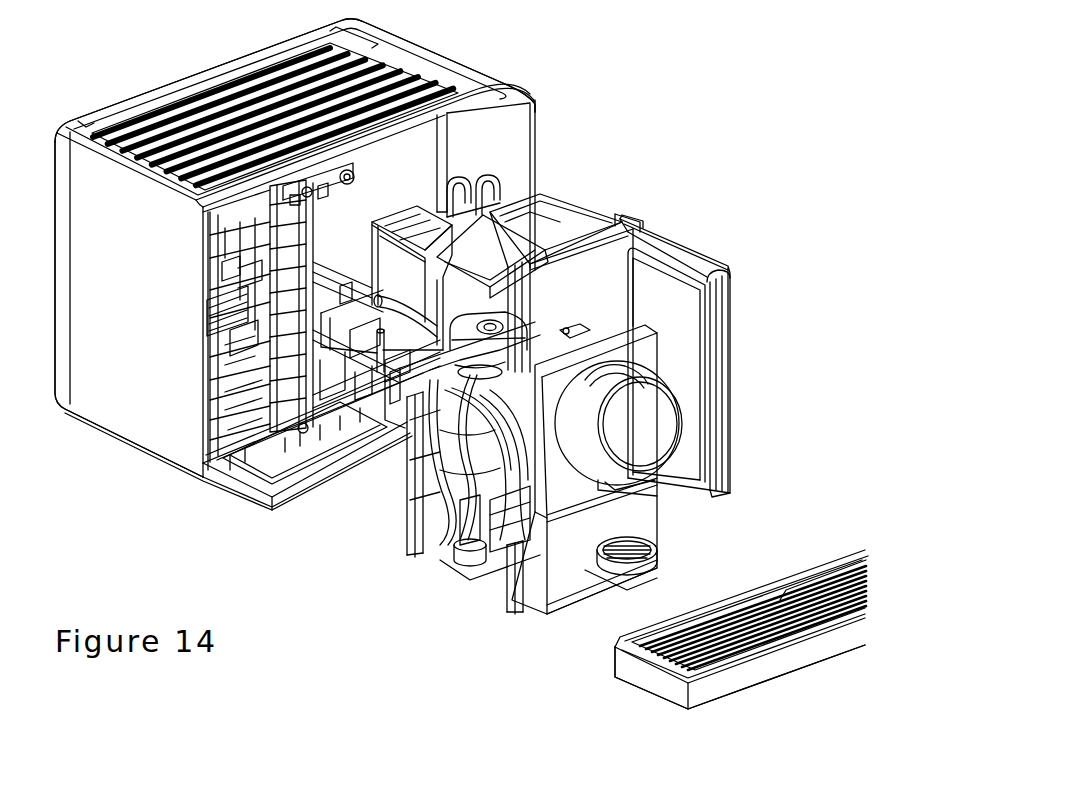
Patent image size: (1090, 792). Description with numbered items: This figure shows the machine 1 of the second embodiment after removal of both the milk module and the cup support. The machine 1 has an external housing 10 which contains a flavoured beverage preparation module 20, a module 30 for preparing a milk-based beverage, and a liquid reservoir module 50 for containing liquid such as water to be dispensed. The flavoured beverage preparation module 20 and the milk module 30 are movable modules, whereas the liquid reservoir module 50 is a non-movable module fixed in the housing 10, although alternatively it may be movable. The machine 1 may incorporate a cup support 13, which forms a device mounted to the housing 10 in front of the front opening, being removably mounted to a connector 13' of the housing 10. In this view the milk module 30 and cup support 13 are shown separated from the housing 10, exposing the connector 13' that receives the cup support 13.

The machine 1 is at (92, 61).
The external housing 10 is at (148, 417).
The cup support 13 is at (720, 634).
The connector 13' is at (281, 465).
The flavoured beverage preparation module 20 is at (423, 500).
The module for preparing a milk-based beverage 30 is at (567, 210).
The liquid reservoir module 50 is at (522, 97).